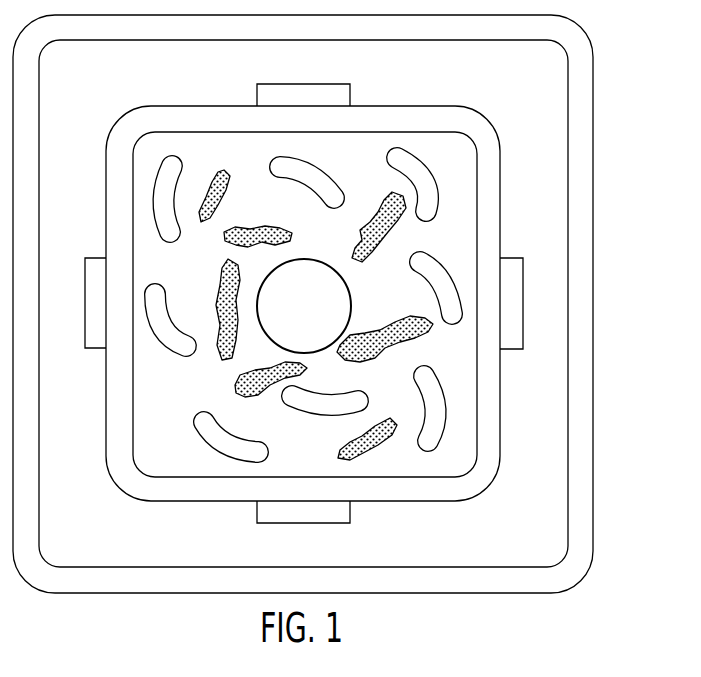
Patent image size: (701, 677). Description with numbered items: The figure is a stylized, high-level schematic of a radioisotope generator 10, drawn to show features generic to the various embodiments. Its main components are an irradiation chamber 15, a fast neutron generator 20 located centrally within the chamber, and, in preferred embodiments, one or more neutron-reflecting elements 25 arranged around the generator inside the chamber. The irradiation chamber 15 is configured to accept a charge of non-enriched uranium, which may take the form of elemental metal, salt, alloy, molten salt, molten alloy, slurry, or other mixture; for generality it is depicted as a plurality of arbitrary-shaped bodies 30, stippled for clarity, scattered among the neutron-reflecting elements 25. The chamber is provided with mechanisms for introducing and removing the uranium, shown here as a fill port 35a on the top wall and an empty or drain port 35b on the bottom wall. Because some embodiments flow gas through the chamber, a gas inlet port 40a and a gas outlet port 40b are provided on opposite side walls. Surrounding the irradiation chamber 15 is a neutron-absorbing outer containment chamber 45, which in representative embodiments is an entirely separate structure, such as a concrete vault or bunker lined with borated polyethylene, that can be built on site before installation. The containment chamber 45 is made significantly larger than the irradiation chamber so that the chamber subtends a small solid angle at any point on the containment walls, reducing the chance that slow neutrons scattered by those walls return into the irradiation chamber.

The radioisotope generator 10 is at (106, 515).
The irradiation chamber 15 is at (418, 106).
The fast neutron generator 20 is at (306, 257).
The neutron-reflecting elements 25 is at (317, 165).
The arbitrary-shaped bodies 30 is at (268, 229).
The fill ports 35a is at (315, 81).
The empty (drain) ports 35b is at (313, 527).
The gas inlet ports 40a is at (95, 254).
The gas outlet ports 40b is at (508, 256).
The neutron-absorbing outer containment chamber 45 is at (533, 5).